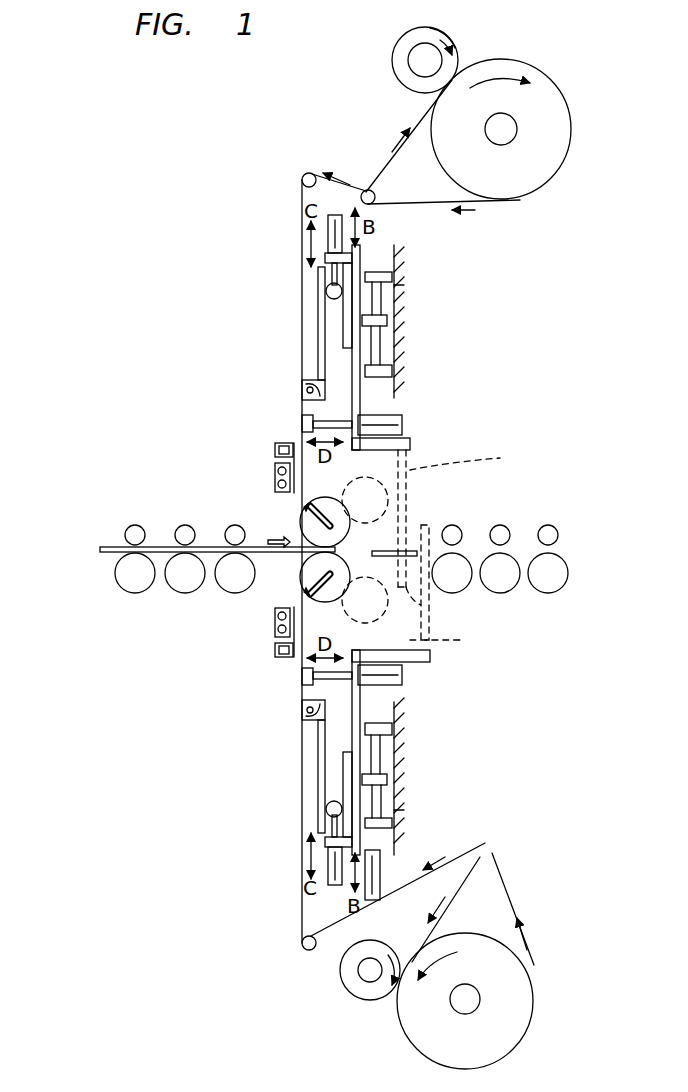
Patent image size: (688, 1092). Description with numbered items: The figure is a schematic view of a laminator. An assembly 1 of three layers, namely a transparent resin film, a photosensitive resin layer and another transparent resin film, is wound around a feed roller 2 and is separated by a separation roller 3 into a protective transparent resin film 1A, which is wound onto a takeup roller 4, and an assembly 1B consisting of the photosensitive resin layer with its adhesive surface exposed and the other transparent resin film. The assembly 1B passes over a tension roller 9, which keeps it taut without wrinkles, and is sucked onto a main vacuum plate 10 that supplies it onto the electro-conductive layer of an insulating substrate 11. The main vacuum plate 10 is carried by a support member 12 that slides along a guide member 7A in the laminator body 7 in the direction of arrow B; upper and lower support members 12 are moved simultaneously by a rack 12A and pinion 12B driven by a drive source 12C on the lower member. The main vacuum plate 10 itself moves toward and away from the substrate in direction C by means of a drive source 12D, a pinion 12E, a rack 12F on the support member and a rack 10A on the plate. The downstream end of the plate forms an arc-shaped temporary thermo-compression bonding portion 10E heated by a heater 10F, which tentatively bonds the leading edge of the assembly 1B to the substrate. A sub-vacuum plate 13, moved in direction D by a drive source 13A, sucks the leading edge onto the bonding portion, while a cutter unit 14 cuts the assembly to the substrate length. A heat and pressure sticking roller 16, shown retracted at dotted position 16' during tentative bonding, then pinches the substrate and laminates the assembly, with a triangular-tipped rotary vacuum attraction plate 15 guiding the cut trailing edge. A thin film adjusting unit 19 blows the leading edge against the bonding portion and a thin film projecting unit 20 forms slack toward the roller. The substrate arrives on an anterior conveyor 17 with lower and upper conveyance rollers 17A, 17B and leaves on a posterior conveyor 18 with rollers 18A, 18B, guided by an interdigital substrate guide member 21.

The assembly 1 is at (568, 118).
The transparent resin film 1A is at (452, 36).
The assembly 1B is at (303, 190).
The feed roller 2 is at (513, 131).
The separation roller 3 is at (376, 195).
The takeup roller 4 is at (420, 60).
The laminator body 7 is at (402, 340).
The guide member 7A is at (396, 286).
The tension roller 9 is at (304, 175).
The main vacuum plate 10 is at (310, 290).
The rack 10A is at (303, 282).
The temporary thermo-compression bonding portion 10E is at (300, 398).
The heater 10F is at (303, 378).
The insulating substrate 11 is at (100, 548).
The support member 12 is at (360, 388).
The rack 12A is at (411, 450).
The pinion 12B is at (415, 527).
The drive source 12C is at (380, 880).
The drive source 12D is at (305, 238).
The pinion 12E is at (318, 296).
The rack 12F is at (396, 262).
The sub-vacuum plate 13 is at (302, 422).
The drive source 13A is at (402, 422).
The cutter unit 14 is at (275, 450).
The rotary vacuum attraction plate 15 is at (305, 603).
The heat and pressure sticking roller 16 is at (301, 549).
The position of the heat and pressure sticking roller 16' is at (474, 548).
The anterior conveyor 17 is at (106, 560).
The lower conveyance rollers 17A is at (235, 592).
The upper conveyance rollers 17B is at (235, 525).
The posterior conveyor 18 is at (570, 548).
The lower conveyance rollers 18A is at (548, 590).
The upper conveyance rollers 18B is at (548, 525).
The thin film adjusting unit 19 is at (293, 472).
The thin film projecting unit 20 is at (275, 487).
The substrate guide member 21 is at (382, 550).